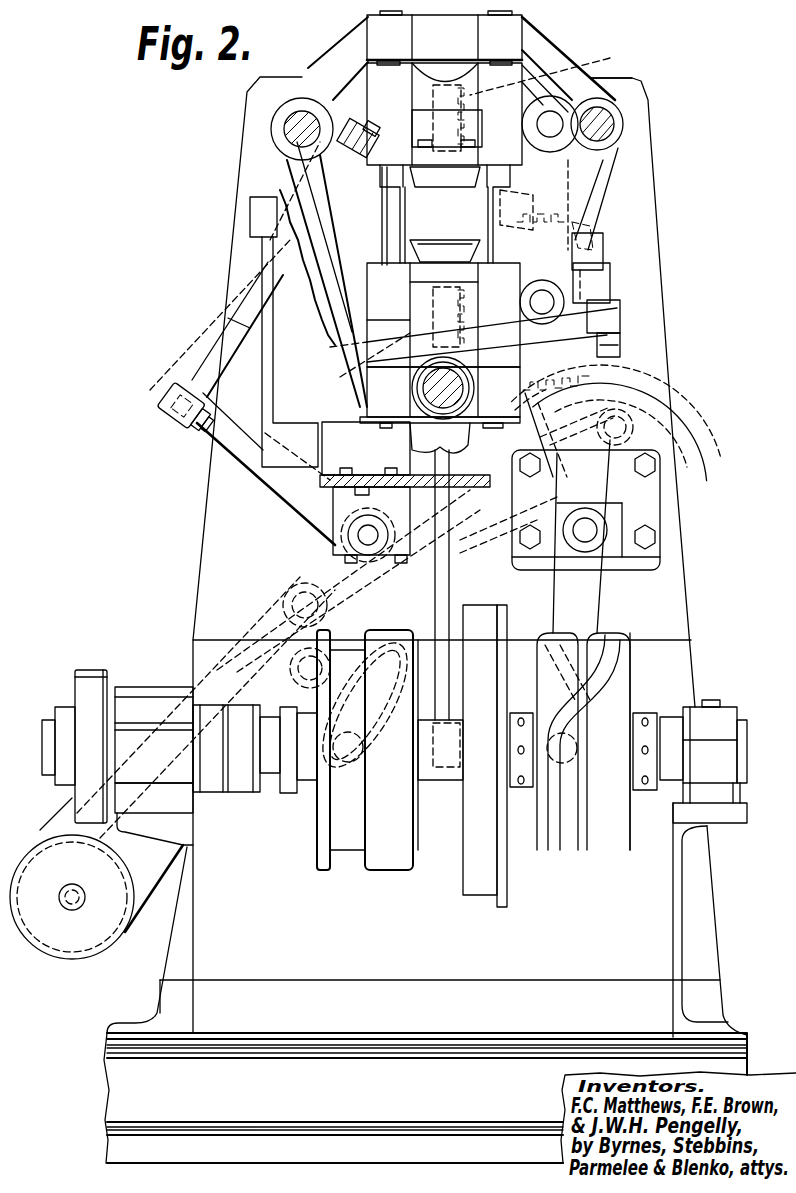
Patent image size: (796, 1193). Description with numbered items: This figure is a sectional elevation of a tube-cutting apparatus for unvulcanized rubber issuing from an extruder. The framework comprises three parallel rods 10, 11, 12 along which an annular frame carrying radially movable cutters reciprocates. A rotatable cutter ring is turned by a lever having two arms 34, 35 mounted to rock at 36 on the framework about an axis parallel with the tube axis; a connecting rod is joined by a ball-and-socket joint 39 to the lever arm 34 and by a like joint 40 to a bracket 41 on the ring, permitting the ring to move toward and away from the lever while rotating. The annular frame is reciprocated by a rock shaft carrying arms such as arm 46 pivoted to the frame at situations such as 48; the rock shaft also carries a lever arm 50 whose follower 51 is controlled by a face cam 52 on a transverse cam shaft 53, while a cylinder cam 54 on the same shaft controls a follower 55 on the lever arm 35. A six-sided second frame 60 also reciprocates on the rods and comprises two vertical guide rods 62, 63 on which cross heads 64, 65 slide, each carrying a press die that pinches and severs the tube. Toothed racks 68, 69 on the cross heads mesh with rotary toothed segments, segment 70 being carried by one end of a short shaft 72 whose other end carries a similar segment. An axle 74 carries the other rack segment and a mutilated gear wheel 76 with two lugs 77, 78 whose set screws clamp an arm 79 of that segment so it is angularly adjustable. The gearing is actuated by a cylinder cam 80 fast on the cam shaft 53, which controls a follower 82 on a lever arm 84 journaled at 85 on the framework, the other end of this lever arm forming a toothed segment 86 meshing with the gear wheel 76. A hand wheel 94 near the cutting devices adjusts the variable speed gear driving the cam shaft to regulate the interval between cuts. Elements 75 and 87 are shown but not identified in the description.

The rod 10 is at (603, 118).
The rod 11 is at (290, 126).
The rod 12 is at (457, 415).
The lever arm 34 is at (305, 497).
The lever arm 35 is at (380, 613).
The rocking pivot 36 is at (350, 540).
The ball-and-socket joint 39 is at (192, 397).
The ball-and-socket joint 40 is at (350, 164).
The bracket 41 is at (317, 87).
The arm 46 is at (268, 283).
The pivot situation 48 is at (258, 210).
The lever arm 50 is at (326, 622).
The follower 51 is at (456, 780).
The face cam 52 is at (480, 880).
The cam shaft 53 is at (267, 768).
The cylinder cam 54 is at (390, 863).
The follower 55 is at (360, 753).
The second frame 60 is at (533, 40).
The guide rod 62 is at (497, 182).
The guide rod 63 is at (386, 222).
The cross head 64 is at (390, 90).
The cross head 65 is at (365, 383).
The toothed rack 68 is at (457, 82).
The toothed rack 69 is at (316, 258).
The toothed segment 70 is at (552, 118).
The short shaft 72 is at (588, 78).
The axle 74 is at (548, 306).
The link 75 is at (598, 204).
The gear wheel 76 is at (663, 374).
The lug 77 is at (598, 253).
The lug 78 is at (605, 320).
The arm 79 is at (606, 285).
The cylinder cam 80 is at (606, 850).
The follower 82 is at (576, 763).
The lever arm 84 is at (583, 608).
The journal 85 is at (588, 533).
The toothed segment 86 is at (668, 402).
The cross bar 87 is at (405, 395).
The hand wheel 94 is at (668, 458).